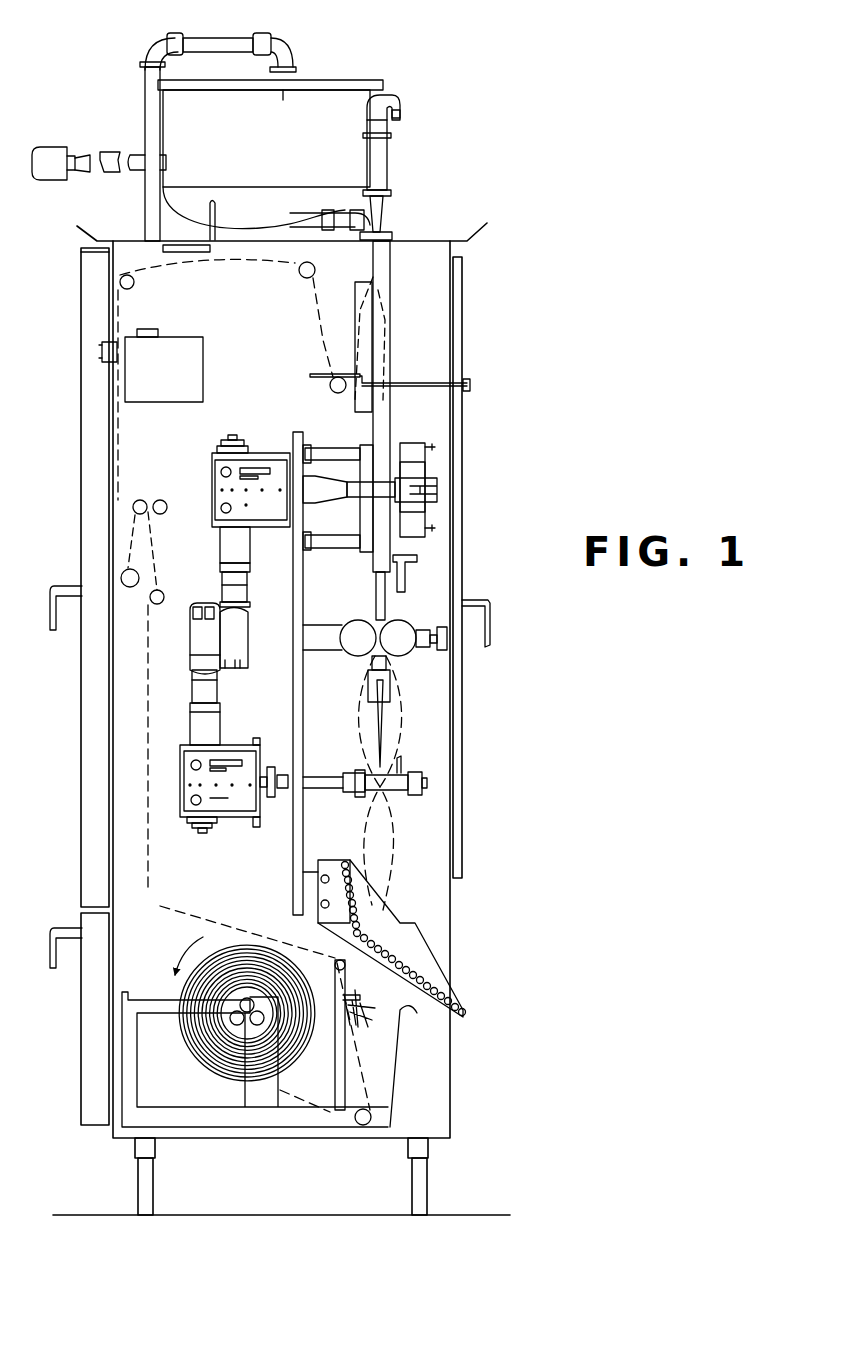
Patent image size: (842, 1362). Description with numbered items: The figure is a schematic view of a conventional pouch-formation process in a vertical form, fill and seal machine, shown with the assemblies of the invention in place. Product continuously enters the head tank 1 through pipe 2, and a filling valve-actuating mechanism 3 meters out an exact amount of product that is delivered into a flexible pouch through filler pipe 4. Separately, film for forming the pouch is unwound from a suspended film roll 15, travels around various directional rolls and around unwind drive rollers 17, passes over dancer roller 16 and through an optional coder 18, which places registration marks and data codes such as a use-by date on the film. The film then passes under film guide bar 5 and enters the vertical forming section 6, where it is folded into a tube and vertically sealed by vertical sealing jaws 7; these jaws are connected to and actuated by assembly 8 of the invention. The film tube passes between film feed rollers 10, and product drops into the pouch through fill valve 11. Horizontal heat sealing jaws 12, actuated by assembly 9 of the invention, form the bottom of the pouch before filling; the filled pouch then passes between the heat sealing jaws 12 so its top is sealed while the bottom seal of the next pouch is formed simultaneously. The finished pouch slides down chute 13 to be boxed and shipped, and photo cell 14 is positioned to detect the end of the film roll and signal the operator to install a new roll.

The head tank 1 is at (380, 80).
The pipe 2 is at (210, 37).
The filling valve-actuating mechanism 3 is at (388, 160).
The filler pipe 4 is at (390, 265).
The film guide bar 5 is at (338, 377).
The vertical forming section 6 is at (398, 393).
The vertical sealing jaws 7 is at (405, 545).
The assembly 8 is at (238, 431).
The assembly 9 is at (208, 842).
The film feed rollers 10 is at (395, 620).
The fill valve 11 is at (392, 693).
The horizontal heat sealing jaws 12 is at (400, 768).
The chute 13 is at (413, 938).
The photo cell 14 is at (372, 1009).
The film roll 15 is at (240, 1078).
The dancer roller 16 is at (125, 578).
The unwind drive rollers 17 is at (140, 492).
The coder 18 is at (148, 378).